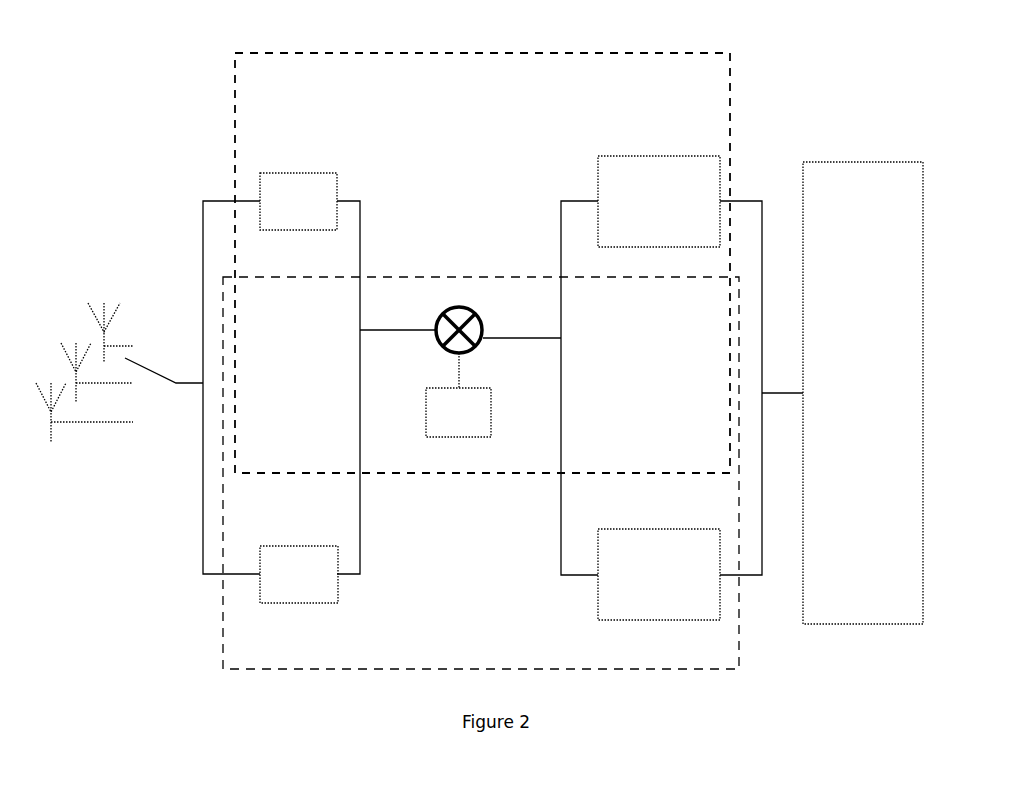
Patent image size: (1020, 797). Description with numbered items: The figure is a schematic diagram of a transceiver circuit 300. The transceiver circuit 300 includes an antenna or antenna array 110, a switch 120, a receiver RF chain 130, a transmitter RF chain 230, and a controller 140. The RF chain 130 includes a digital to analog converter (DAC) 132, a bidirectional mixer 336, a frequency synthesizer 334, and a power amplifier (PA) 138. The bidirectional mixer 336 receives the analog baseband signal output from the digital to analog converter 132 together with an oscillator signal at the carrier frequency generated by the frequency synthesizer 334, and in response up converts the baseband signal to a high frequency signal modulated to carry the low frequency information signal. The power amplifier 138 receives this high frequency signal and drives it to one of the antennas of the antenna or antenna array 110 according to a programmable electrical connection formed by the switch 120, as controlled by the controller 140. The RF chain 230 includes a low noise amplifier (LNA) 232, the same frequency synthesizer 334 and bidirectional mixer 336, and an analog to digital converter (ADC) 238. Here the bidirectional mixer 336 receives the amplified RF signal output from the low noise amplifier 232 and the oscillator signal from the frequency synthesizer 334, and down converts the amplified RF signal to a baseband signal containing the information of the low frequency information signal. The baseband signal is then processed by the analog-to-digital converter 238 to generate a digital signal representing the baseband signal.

The transceiver circuit 300 is at (182, 28).
The antenna or antenna array 110 is at (35, 320).
The switch 120 is at (151, 327).
The receiver RF chain 130 is at (620, 51).
The digital to analog converter (DAC) 132 is at (685, 156).
The power amplifier (PA) 138 is at (328, 173).
The controller 140 is at (883, 161).
The transmitter RF chain 230 is at (638, 669).
The low noise amplifier (LNA) 232 is at (315, 546).
The analog to digital converter (ADC) 238 is at (680, 530).
The frequency synthesizer 334 is at (491, 420).
The bidirectional mixer 336 is at (480, 344).